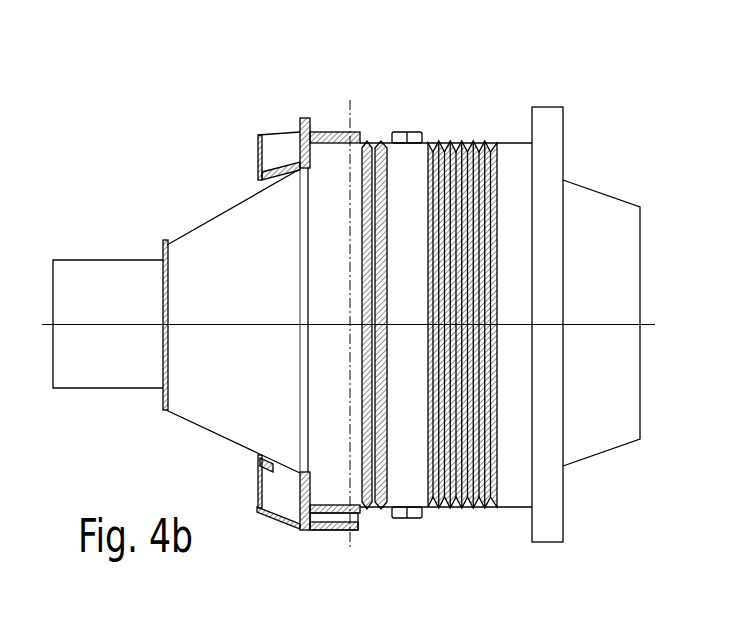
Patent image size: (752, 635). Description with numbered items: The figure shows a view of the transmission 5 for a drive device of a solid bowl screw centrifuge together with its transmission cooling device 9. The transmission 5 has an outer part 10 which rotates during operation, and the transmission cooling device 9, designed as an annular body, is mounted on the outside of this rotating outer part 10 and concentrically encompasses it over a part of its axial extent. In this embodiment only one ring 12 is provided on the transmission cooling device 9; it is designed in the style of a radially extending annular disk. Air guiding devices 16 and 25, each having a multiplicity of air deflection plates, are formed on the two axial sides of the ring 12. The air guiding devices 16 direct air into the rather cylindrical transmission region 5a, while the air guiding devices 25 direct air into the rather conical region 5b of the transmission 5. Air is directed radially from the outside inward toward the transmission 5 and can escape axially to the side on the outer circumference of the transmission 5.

The transmission 5 is at (565, 105).
The transmission region 5a is at (342, 400).
The conical region 5b is at (176, 406).
The transmission cooling device 9 is at (305, 114).
The outer part 10 is at (479, 139).
The ring 12 is at (298, 117).
The air guiding devices 16 is at (358, 127).
The air guiding devices 25 is at (256, 133).